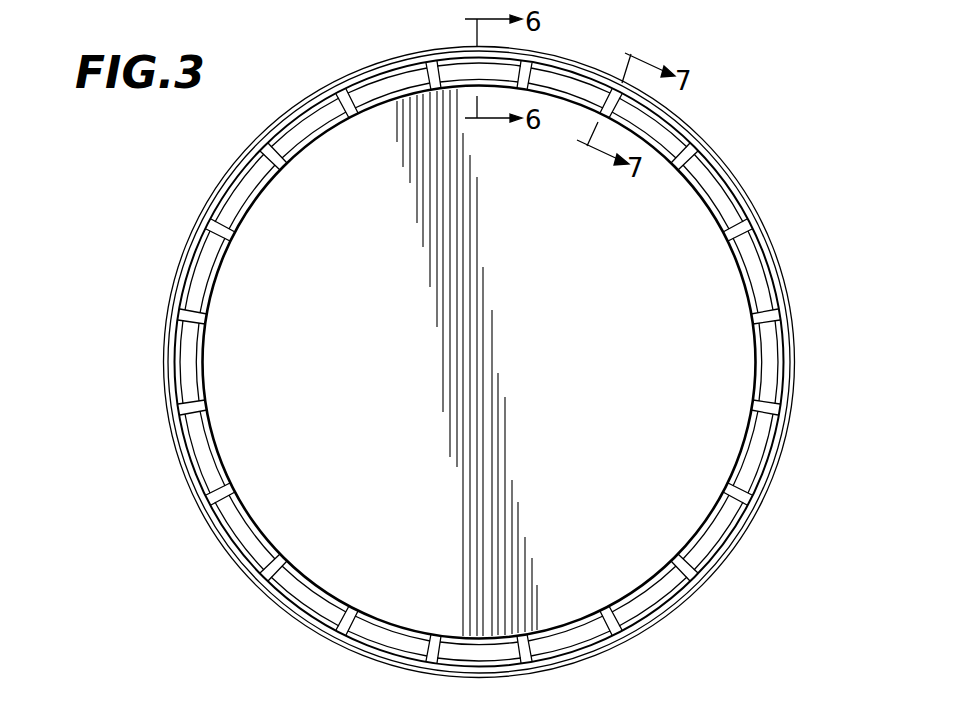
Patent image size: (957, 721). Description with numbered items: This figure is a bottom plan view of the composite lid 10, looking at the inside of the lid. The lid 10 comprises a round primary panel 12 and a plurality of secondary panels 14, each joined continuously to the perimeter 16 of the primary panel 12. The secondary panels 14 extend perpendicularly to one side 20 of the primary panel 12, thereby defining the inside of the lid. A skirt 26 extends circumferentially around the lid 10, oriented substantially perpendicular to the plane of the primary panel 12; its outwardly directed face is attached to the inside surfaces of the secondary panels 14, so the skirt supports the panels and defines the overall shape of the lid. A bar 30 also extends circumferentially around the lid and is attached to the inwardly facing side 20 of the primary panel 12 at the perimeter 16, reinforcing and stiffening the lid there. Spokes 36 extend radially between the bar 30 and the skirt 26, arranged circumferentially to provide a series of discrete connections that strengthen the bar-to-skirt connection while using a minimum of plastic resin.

The lid 10 is at (500, 373).
The primary panel 12 is at (680, 523).
The secondary panels 14 is at (778, 226).
The perimeter 16 is at (258, 522).
The side 20 is at (546, 369).
The skirt 26 is at (317, 623).
The bar 30 is at (302, 578).
The spokes 36 is at (767, 403).